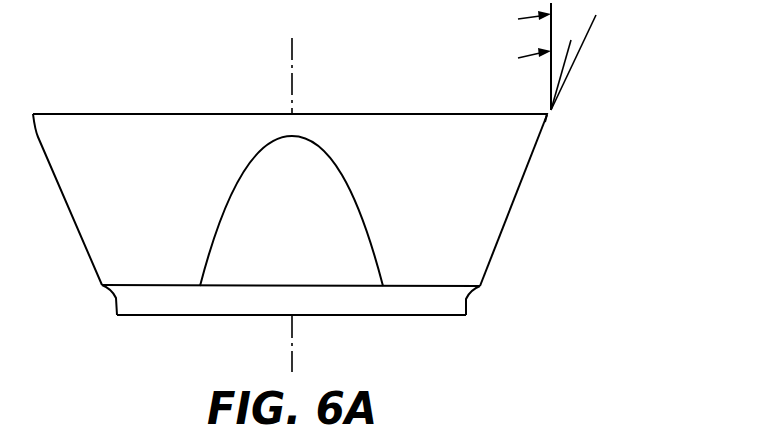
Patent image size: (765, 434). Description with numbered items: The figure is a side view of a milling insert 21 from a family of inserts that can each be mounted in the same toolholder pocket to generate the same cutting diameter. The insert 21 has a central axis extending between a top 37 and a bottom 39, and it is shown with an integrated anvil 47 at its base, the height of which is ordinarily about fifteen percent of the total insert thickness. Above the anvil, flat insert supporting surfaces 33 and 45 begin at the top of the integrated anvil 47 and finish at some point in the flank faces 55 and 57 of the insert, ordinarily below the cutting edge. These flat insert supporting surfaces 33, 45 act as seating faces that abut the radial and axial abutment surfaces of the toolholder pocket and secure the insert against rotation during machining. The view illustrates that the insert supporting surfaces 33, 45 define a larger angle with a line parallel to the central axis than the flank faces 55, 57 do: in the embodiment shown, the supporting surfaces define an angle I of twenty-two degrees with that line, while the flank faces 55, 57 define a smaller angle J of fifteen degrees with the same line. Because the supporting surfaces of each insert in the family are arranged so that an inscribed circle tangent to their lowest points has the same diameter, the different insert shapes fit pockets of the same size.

The insert 21 is at (587, 117).
The insert supporting surface 33 is at (510, 224).
The top 37 is at (130, 113).
The bottom 39 is at (329, 316).
The insert supporting surface 45 is at (244, 265).
The integrated anvil 47 is at (443, 302).
The flank face 55 is at (547, 127).
The flank face 57 is at (397, 135).
The angle of insert supporting surfaces I is at (597, 24).
The angle of flank faces J is at (573, 53).